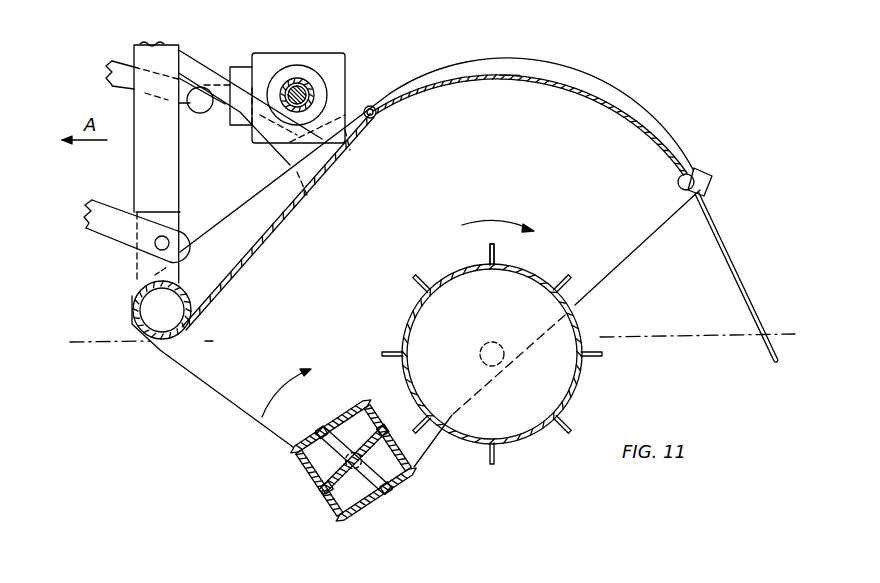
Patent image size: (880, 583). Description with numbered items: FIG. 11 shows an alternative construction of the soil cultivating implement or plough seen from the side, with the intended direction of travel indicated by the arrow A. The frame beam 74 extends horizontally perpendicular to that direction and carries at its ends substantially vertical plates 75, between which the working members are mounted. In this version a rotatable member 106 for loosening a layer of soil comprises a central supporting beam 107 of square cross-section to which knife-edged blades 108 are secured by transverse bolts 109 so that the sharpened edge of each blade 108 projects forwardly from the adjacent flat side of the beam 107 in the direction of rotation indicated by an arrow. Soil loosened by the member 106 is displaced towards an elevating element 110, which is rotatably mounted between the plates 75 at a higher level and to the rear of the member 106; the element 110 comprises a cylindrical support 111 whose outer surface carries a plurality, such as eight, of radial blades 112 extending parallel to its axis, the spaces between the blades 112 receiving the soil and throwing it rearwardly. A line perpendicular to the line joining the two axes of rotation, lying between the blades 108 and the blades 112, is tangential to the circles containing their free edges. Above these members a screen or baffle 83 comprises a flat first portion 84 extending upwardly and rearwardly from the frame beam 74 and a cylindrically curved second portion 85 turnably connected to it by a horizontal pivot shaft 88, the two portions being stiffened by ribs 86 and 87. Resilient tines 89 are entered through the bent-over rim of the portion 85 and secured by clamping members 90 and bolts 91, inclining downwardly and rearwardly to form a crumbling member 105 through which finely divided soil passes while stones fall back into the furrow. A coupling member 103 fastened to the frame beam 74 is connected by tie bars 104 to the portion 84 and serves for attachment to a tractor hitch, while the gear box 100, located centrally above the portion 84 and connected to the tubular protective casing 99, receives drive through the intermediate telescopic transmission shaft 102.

The frame beam 74 is at (132, 297).
The vertical plates 75 is at (620, 132).
The screen or baffle 83 is at (508, 77).
The first portion of screen or baffle 84 is at (308, 212).
The second portion of screen or baffle 85 is at (490, 82).
The ribs 86 is at (242, 207).
The ribs 87 is at (584, 82).
The horizontal pivot shaft 88 is at (371, 105).
The tines 89 is at (729, 262).
The clamping members 90 is at (680, 182).
The bolts 91 is at (706, 176).
The tubular protective casing 99 is at (293, 66).
The gear box 100 is at (332, 60).
The intermediate telescopic transmission shaft 102 is at (121, 62).
The coupling member 103 is at (147, 48).
The tie bars 104 is at (198, 66).
The crumbling member 105 is at (732, 242).
The rotatable member 106 is at (303, 472).
The central supporting beam 107 is at (408, 478).
The knife-edged blades 108 is at (378, 403).
The transverse bolts 109 is at (320, 428).
The elevating element 110 is at (406, 309).
The cylindrical support 111 is at (541, 276).
The radial blades 112 is at (486, 250).